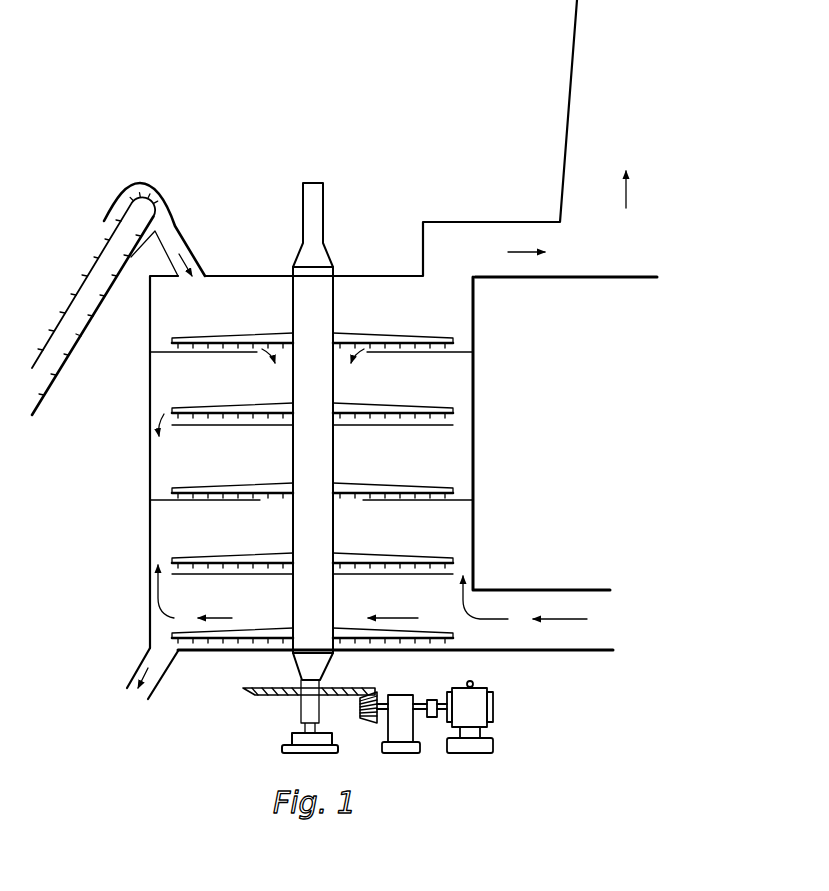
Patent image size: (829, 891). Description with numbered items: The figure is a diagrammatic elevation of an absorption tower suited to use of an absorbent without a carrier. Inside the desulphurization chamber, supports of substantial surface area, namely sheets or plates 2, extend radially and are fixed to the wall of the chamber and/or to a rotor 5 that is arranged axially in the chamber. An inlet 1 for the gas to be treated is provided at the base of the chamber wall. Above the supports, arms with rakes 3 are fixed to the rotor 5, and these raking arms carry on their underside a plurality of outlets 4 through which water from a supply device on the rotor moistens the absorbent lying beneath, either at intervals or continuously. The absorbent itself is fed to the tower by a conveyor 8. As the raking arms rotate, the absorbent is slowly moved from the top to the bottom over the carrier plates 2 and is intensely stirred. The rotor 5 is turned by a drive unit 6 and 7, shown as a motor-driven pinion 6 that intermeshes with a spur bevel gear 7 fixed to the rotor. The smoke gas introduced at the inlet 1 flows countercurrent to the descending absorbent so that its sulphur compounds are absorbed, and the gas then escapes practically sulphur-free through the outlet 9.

The inlet 1 is at (549, 616).
The plates 2 is at (202, 425).
The rakes 3 is at (246, 337).
The outlets 4 is at (400, 335).
The rotor 5 is at (318, 620).
The motor-driven pinion 6 is at (365, 720).
The drive unit 7 is at (307, 703).
The conveyor 8 is at (90, 318).
The outlet 9 is at (623, 204).